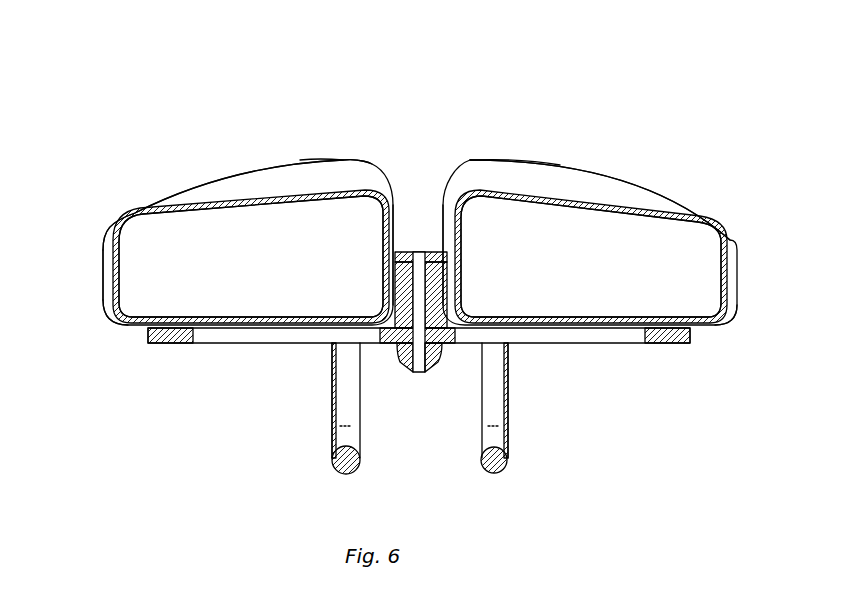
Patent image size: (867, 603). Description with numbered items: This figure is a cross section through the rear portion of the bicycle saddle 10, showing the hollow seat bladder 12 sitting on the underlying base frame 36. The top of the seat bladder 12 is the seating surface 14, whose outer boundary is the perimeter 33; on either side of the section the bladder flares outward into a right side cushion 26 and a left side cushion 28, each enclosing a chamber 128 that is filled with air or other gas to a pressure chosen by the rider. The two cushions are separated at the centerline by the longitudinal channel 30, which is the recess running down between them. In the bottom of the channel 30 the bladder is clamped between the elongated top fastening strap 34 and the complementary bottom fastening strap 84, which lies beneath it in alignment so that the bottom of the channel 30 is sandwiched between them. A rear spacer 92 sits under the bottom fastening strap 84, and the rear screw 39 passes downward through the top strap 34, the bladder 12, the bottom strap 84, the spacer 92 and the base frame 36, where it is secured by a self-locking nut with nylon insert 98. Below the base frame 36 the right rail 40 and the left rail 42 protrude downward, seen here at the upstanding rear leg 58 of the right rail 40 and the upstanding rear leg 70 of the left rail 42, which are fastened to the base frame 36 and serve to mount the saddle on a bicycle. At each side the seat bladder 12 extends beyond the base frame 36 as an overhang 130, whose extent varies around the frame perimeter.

The bicycle saddle 10 is at (157, 72).
The seat bladder 12 is at (110, 232).
The seating surface portion 14 is at (192, 182).
The right side cushion 26 is at (256, 165).
The left side cushion 28 is at (620, 178).
The longitudinal channel 30 is at (413, 240).
The perimeter 33 is at (343, 160).
The top fastening strap 34 is at (456, 232).
The base frame 36 is at (674, 345).
The rear screw 39 is at (420, 375).
The right rail 40 is at (332, 447).
The left rail 42 is at (510, 445).
The rear leg 58 is at (332, 408).
The rear leg 70 is at (510, 405).
The bottom fastening strap 84 is at (455, 292).
The rear spacer 92 is at (390, 316).
The self-locking nuts with nylon inserts 98 is at (400, 358).
The chamber 128 is at (226, 266).
The overhang 130 is at (125, 322).